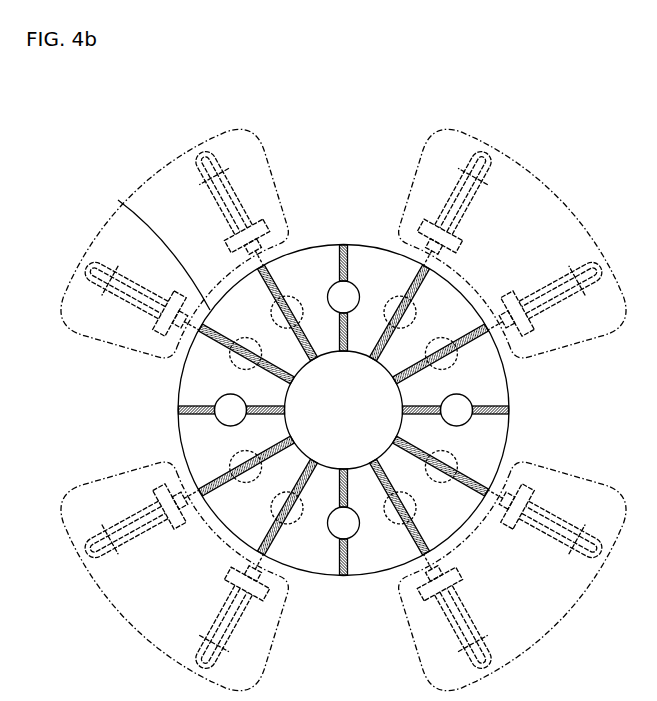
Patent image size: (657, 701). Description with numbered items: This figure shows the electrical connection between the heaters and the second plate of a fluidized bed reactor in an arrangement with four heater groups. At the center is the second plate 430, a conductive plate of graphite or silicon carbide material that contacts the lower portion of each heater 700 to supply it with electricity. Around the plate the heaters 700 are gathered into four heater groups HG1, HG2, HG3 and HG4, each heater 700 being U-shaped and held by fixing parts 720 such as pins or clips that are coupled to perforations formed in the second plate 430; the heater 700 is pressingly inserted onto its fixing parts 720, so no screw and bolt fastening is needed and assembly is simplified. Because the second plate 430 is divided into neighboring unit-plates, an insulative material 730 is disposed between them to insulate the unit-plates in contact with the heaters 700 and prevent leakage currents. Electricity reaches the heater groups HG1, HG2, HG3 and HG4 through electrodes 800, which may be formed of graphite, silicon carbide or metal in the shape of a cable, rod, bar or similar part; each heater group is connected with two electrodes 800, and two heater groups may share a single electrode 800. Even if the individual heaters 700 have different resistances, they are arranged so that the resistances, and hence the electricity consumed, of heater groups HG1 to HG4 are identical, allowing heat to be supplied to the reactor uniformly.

The second plate 430 is at (120, 203).
The heater 700 is at (192, 150).
The fixing part 720 is at (274, 302).
The insulative material 730 is at (313, 387).
The electrode 800 is at (216, 418).
The heater group HG1 is at (137, 187).
The heater group HG2 is at (130, 630).
The heater group HG3 is at (558, 628).
The heater group HG4 is at (553, 190).